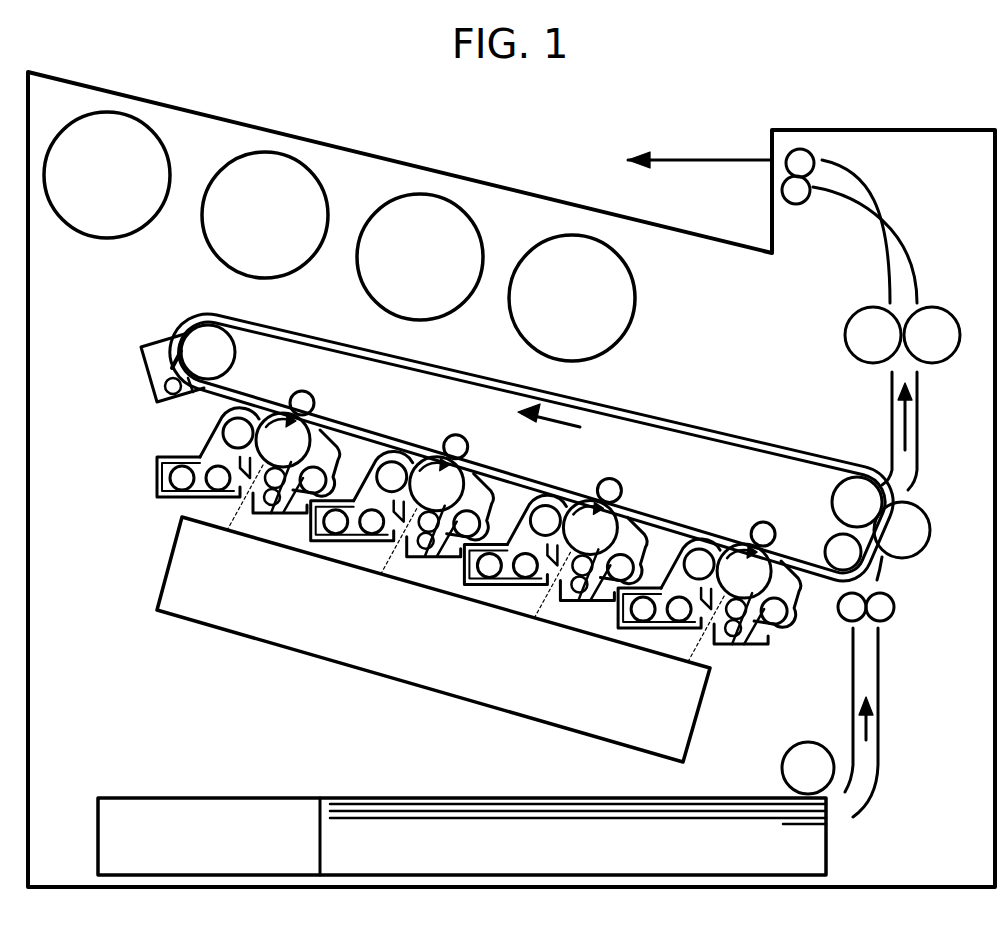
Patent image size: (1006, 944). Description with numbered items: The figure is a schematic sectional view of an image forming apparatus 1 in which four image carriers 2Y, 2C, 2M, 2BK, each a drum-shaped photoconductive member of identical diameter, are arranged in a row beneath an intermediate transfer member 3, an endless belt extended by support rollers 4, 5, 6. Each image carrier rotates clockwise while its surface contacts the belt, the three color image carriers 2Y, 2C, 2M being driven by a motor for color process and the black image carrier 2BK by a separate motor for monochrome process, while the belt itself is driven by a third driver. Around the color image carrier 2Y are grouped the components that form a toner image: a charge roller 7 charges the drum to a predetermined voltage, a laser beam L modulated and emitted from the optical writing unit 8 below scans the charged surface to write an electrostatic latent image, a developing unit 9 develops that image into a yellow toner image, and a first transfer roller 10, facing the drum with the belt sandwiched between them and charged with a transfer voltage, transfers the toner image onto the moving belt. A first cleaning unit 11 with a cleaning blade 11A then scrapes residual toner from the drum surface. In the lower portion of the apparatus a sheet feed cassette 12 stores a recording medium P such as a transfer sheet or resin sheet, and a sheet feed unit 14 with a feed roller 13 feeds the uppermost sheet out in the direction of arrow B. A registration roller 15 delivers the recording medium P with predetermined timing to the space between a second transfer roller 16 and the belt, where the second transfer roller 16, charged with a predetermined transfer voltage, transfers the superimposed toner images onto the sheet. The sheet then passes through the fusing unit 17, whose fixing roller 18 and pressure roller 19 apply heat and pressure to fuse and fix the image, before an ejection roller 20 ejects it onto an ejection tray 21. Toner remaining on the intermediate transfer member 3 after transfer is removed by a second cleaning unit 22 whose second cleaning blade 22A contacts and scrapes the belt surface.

The image forming apparatus 1 is at (896, 118).
The color image carrier 2Y is at (294, 476).
The color image carrier 2C is at (415, 493).
The color image carrier 2M is at (569, 536).
The black image carrier 2BK is at (722, 579).
The intermediate transfer member 3 is at (719, 433).
The support roller 4 is at (831, 501).
The support roller 5 is at (233, 361).
The support roller 6 is at (834, 561).
The charge roller 7 is at (274, 523).
The optical writing unit 8 is at (165, 573).
The developing unit 9 is at (215, 425).
The first transfer roller 10 is at (324, 394).
The first cleaning unit 11 is at (342, 458).
The cleaning blade 11A is at (366, 454).
The sheet feed cassette 12 is at (437, 798).
The feed roller 13 is at (782, 771).
The sheet feed unit 14 is at (533, 773).
The registration roller 15 is at (896, 608).
The second transfer roller 16 is at (931, 546).
The fusing unit 17 is at (864, 316).
The fixing roller 18 is at (873, 308).
The pressure roller 19 is at (932, 308).
The ejection roller 20 is at (798, 205).
The ejection tray 21 is at (497, 184).
The second cleaning unit 22 is at (154, 364).
The second cleaning blade 22A is at (172, 366).
The arrow B is at (871, 739).
The laser beam L is at (233, 509).
The recording medium P is at (501, 800).